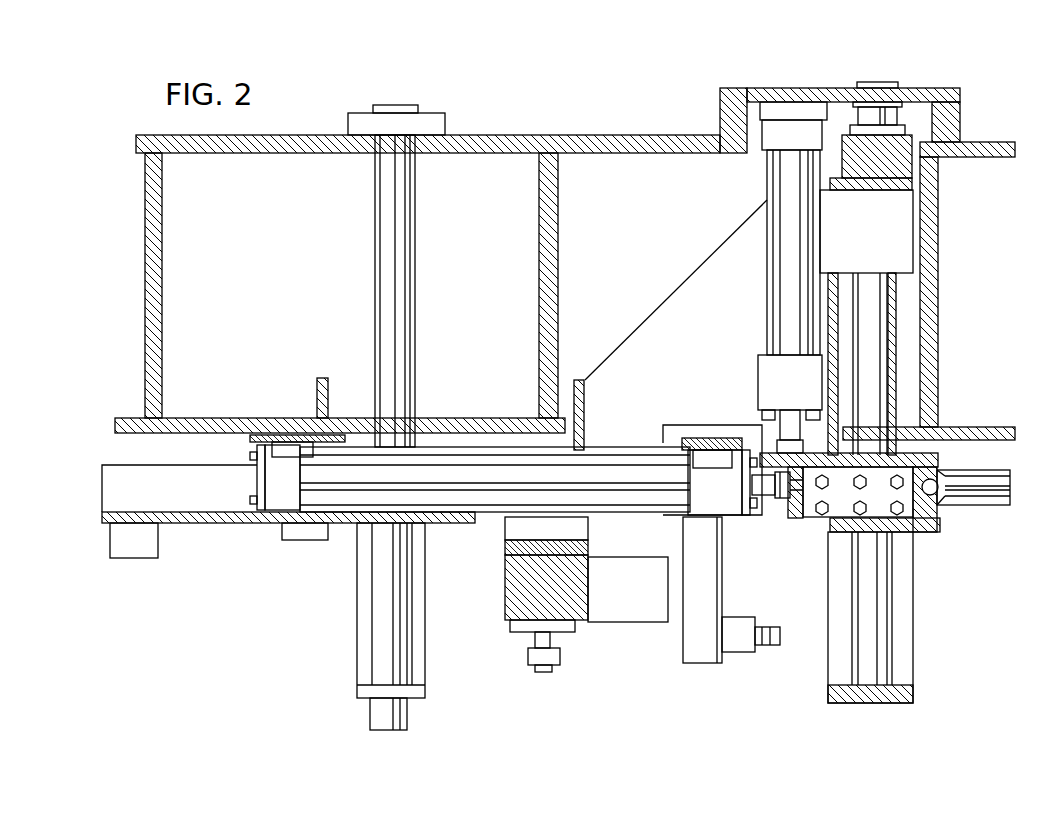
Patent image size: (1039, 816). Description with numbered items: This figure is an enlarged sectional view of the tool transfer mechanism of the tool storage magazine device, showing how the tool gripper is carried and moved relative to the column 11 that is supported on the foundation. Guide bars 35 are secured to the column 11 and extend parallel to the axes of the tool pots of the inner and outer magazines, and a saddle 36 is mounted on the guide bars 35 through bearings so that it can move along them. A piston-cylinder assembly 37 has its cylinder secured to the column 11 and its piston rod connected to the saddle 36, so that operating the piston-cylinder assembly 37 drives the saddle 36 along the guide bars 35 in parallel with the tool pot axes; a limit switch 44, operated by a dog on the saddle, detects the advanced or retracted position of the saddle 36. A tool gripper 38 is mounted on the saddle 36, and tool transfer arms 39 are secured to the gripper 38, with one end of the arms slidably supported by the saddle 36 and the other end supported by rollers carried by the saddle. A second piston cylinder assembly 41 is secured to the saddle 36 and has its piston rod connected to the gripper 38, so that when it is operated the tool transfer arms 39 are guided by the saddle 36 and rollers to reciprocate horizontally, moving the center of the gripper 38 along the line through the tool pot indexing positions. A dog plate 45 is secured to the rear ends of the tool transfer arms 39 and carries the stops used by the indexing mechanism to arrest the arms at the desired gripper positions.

The column 11 is at (668, 135).
The guide bar 35 is at (385, 258).
The saddle 36 is at (872, 427).
The piston-cylinder assembly 37 is at (797, 213).
The tool gripper 38 is at (987, 500).
The tool transfer arm 39 is at (800, 520).
The piston cylinder assembly 41 is at (598, 470).
The limit switch 44 is at (738, 638).
The dog plate 45 is at (228, 520).